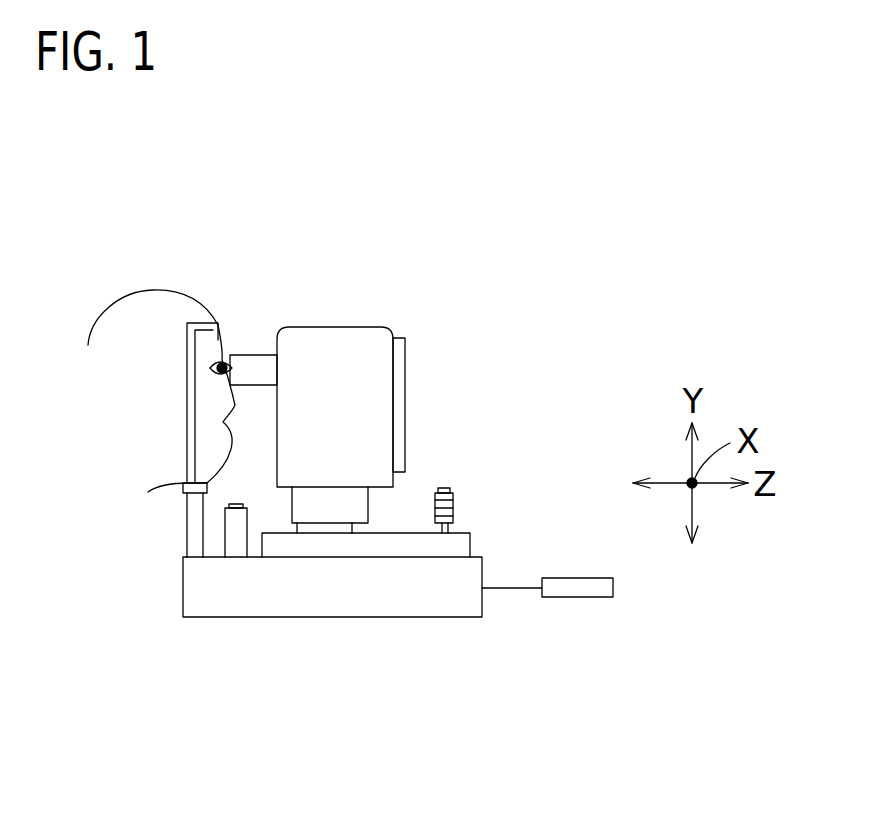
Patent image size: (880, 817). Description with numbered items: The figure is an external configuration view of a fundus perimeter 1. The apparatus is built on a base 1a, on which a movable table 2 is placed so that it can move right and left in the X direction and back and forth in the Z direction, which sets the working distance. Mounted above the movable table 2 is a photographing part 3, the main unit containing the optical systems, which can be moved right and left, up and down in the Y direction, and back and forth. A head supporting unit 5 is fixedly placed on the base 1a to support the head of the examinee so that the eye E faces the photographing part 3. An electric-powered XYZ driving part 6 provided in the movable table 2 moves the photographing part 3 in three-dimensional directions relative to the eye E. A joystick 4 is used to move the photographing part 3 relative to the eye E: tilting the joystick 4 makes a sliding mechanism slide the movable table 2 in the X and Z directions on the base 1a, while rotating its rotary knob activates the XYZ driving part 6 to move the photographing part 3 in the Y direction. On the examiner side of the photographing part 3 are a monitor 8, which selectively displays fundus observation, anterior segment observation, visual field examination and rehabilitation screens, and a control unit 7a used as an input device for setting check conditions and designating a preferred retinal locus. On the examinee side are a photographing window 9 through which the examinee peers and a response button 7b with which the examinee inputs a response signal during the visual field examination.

The fundus perimeter 1 is at (518, 362).
The base 1a is at (383, 577).
The movable table 2 is at (460, 548).
The photographing part 3 is at (363, 340).
The joystick 4 is at (457, 510).
The head supporting unit 5 is at (168, 505).
The XYZ driving part 6 is at (353, 508).
The control unit 7a is at (583, 588).
The response button 7b is at (238, 542).
The monitor 8 is at (397, 410).
The photographing window 9 is at (257, 363).
The eye E is at (223, 362).